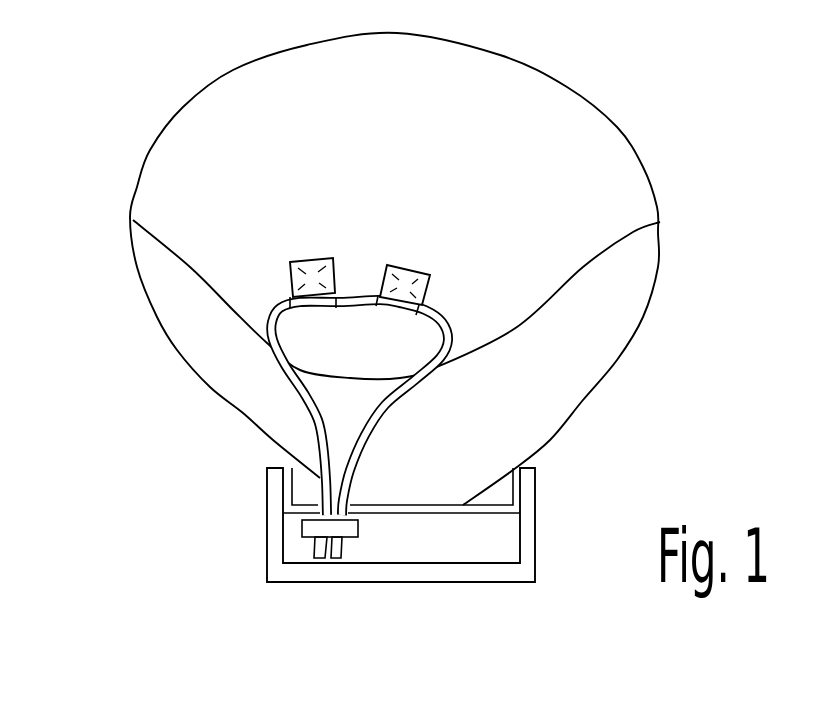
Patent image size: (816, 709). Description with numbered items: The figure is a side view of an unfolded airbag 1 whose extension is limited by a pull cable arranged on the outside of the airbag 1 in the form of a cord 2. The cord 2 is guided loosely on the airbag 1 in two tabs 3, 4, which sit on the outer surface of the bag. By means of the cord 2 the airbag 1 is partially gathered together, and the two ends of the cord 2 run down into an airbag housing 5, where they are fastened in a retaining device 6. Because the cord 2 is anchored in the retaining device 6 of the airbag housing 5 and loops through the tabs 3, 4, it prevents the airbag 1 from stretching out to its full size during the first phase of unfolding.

The airbag 1 is at (600, 146).
The cord 2 is at (312, 417).
The tab 3 is at (310, 267).
The tab 4 is at (392, 272).
The airbag housing 5 is at (480, 542).
The retaining device 6 is at (294, 552).